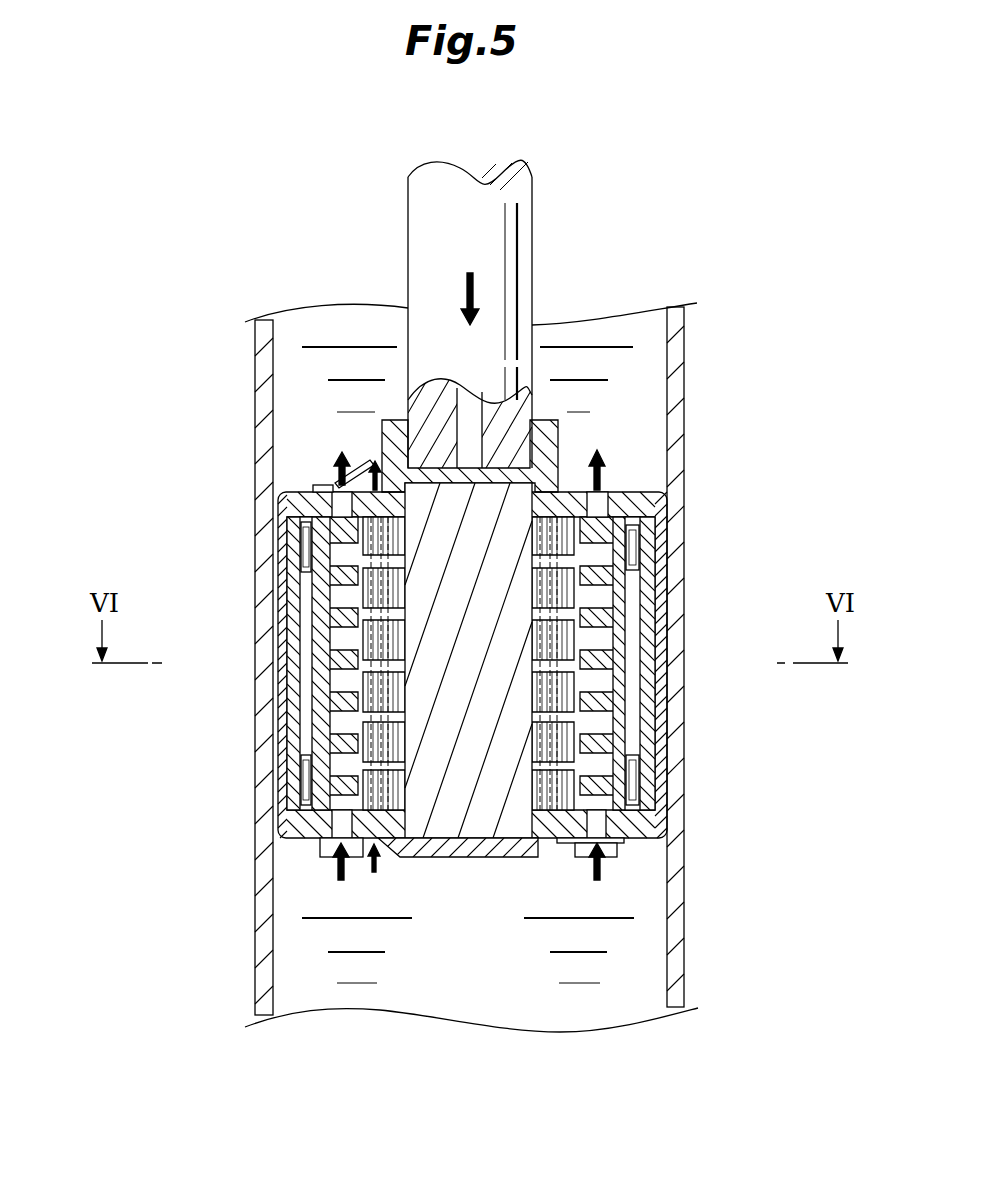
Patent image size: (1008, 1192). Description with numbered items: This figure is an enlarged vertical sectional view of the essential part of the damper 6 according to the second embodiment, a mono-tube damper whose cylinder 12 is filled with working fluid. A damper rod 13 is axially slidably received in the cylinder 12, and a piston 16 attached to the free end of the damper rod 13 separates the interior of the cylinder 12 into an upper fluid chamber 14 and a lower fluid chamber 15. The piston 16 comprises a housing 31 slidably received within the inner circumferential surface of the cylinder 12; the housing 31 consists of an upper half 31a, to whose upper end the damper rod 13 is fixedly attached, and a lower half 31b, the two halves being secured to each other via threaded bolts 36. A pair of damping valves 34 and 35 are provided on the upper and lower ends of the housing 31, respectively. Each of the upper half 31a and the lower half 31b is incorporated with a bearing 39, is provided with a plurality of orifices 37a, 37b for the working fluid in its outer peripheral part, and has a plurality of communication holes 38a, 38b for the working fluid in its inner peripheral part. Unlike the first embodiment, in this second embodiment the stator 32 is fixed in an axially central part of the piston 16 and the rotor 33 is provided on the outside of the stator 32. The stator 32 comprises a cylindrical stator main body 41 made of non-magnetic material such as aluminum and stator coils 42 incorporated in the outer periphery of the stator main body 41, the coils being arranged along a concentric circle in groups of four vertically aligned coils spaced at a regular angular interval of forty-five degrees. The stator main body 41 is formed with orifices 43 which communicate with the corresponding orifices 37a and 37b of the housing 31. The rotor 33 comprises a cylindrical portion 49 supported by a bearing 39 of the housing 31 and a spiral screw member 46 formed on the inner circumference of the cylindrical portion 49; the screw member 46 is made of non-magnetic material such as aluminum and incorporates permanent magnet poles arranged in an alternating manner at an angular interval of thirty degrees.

The damper 6 is at (226, 282).
The cylinder 12 is at (262, 921).
The damper rod 13 is at (528, 260).
The upper fluid chamber 14 is at (645, 333).
The lower fluid chamber 15 is at (645, 957).
The piston 16 is at (636, 426).
The housing 31 is at (660, 470).
The upper half 31a is at (658, 592).
The lower half 31b is at (663, 818).
The stator 32 is at (577, 652).
The rotor 33 is at (636, 710).
The damping valve 34 is at (335, 478).
The damping valve 35 is at (623, 841).
The threaded bolt 36 is at (607, 848).
The orifice 37a is at (335, 500).
The orifice 37b is at (338, 832).
The communication hole 38a is at (620, 472).
The communication hole 38b is at (615, 833).
The bearing 39 is at (305, 545).
The stator main body 41 is at (425, 633).
The stator coil 42 is at (362, 588).
The orifice 43 is at (330, 745).
The spiral screw member 46 is at (340, 697).
The cylindrical portion 49 is at (650, 770).